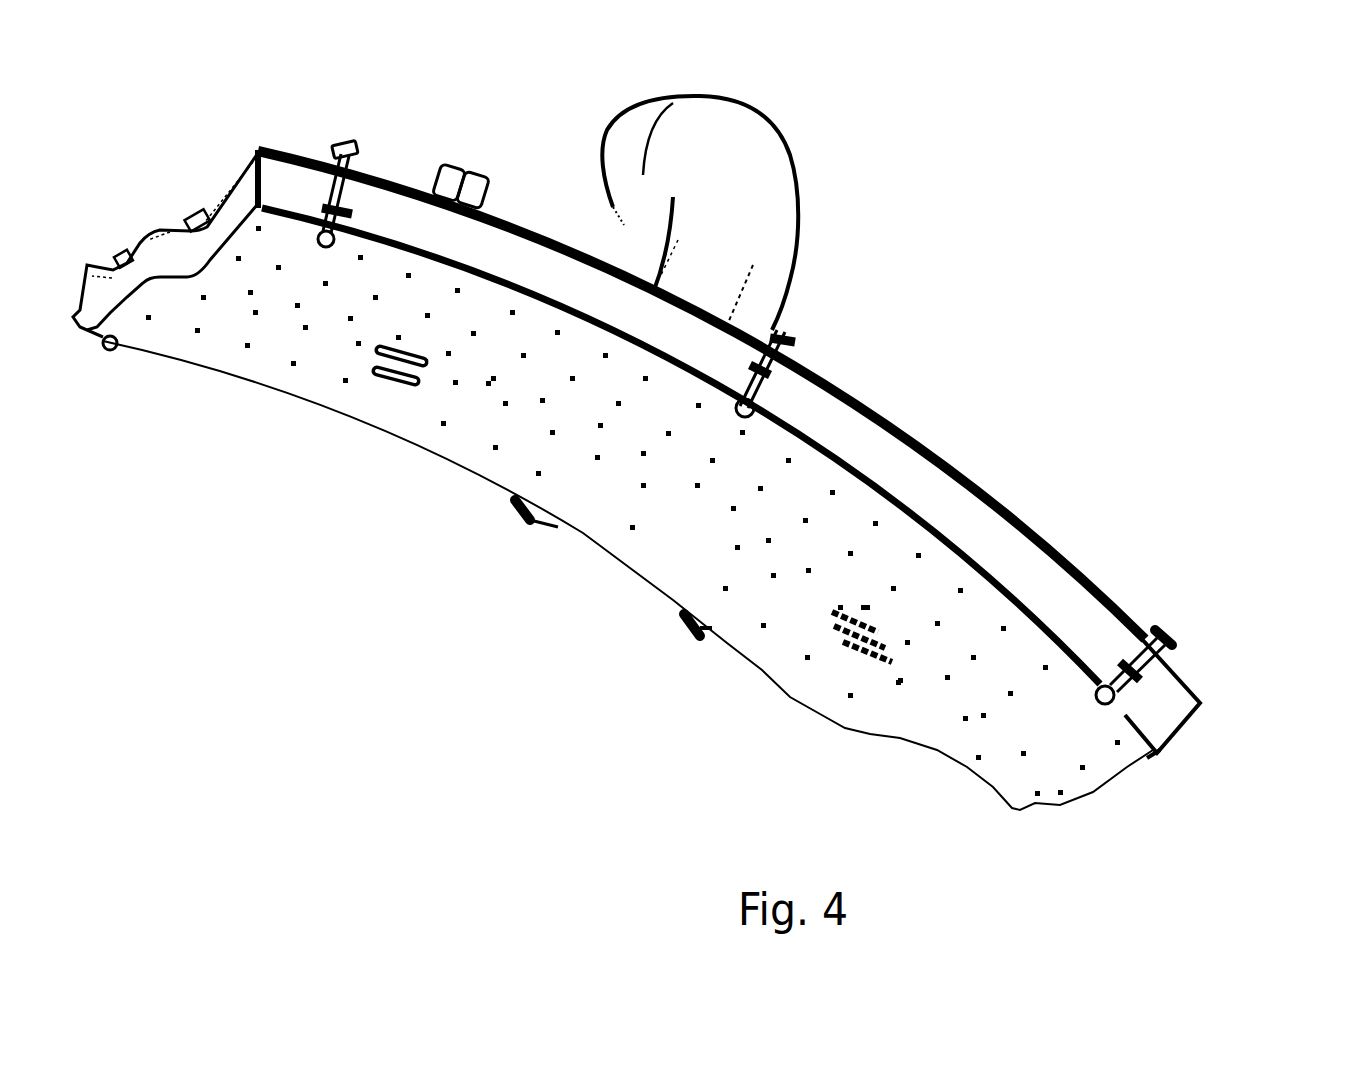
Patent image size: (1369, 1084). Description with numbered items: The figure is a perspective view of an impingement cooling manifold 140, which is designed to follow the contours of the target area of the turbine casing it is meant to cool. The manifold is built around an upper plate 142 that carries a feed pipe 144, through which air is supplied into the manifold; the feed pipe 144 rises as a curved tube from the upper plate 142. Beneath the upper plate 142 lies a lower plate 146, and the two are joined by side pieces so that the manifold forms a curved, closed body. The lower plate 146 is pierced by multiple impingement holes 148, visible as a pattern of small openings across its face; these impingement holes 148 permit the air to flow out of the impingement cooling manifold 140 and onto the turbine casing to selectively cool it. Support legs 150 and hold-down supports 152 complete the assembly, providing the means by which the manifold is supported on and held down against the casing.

The impingement cooling manifold 140 is at (1043, 600).
The upper plate 142 is at (950, 467).
The feed pipe 144 is at (767, 217).
The lower plate 146 is at (267, 368).
The impingement holes 148 is at (678, 557).
The support legs 150 is at (1173, 640).
The hold-down supports 152 is at (830, 670).